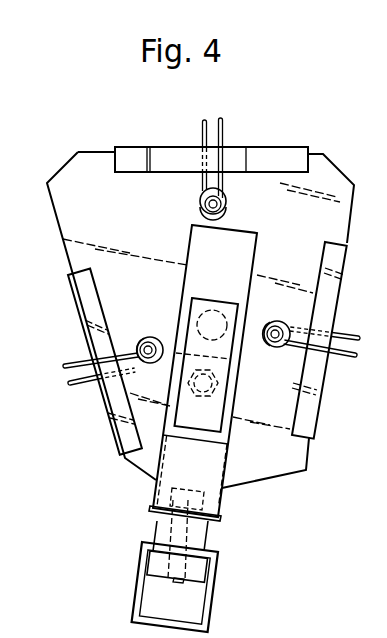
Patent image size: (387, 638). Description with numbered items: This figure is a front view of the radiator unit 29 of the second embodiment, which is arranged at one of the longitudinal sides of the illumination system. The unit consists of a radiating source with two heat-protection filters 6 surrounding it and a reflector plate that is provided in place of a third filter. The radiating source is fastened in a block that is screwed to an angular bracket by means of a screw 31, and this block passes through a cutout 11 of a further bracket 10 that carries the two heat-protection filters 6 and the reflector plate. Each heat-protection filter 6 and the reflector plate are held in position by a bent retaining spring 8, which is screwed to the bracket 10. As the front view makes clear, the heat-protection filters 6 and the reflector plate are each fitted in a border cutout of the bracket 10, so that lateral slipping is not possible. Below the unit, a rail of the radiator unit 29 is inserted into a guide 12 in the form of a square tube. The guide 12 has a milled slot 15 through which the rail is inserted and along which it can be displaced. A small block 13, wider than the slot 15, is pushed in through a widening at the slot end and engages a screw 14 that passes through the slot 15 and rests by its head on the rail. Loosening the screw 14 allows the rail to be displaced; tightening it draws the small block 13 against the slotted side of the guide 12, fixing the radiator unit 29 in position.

The radiator unit 29 is at (75, 134).
The bracket 10 is at (67, 183).
The heat-protection filter 6 is at (165, 157).
The retaining spring 8 is at (223, 133).
The cutout 11 is at (194, 246).
The screw 31 is at (209, 390).
The screw 14 is at (190, 533).
The slot 15 is at (188, 556).
The small block 13 is at (198, 568).
The guide 12 is at (210, 607).